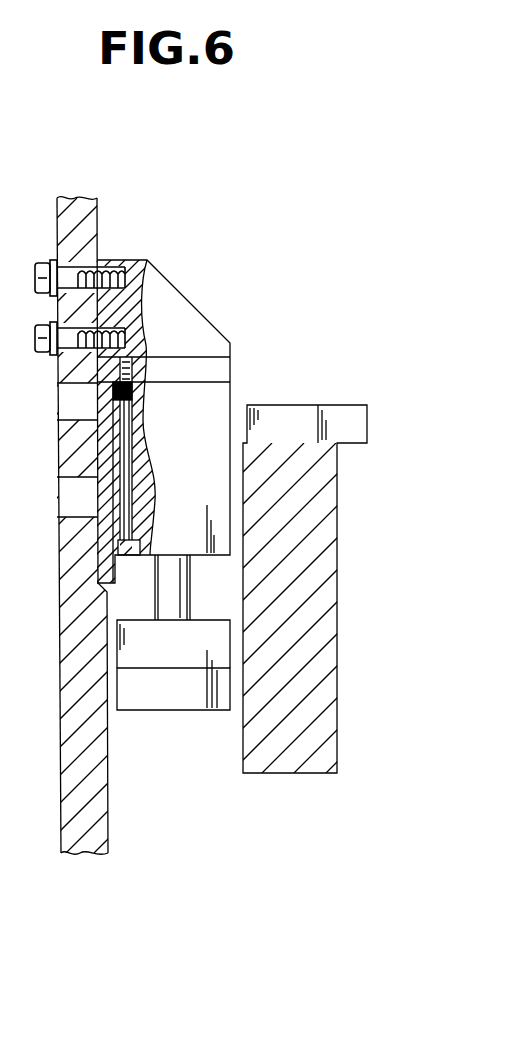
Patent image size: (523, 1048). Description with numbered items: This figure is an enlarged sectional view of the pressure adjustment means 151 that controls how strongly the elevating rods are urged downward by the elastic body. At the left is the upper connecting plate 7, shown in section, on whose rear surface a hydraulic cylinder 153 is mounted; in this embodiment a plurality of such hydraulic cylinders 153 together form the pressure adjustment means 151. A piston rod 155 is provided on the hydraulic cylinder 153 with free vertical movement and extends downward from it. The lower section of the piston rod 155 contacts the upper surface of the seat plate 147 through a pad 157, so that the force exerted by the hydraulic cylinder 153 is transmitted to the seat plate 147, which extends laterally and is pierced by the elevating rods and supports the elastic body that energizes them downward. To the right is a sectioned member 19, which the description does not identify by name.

The upper connecting plate 7 is at (77, 750).
The frame member 19 is at (310, 613).
The seat plate 147 is at (168, 693).
The pressure adjustment means 151 is at (261, 560).
The hydraulic cylinder 153 is at (232, 388).
The piston rod 155 is at (173, 598).
The pad 157 is at (218, 643).